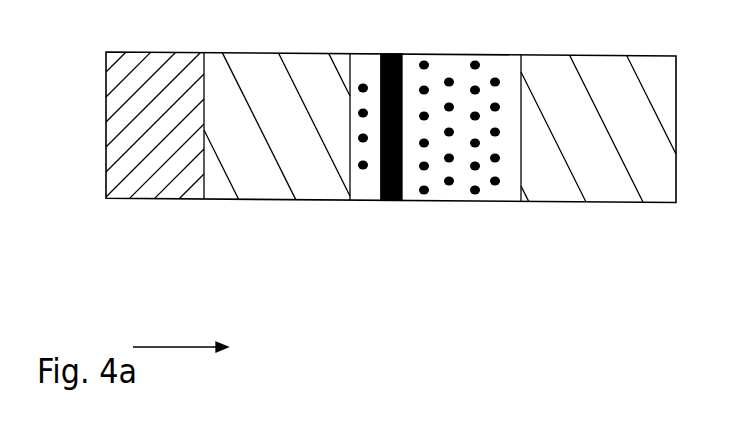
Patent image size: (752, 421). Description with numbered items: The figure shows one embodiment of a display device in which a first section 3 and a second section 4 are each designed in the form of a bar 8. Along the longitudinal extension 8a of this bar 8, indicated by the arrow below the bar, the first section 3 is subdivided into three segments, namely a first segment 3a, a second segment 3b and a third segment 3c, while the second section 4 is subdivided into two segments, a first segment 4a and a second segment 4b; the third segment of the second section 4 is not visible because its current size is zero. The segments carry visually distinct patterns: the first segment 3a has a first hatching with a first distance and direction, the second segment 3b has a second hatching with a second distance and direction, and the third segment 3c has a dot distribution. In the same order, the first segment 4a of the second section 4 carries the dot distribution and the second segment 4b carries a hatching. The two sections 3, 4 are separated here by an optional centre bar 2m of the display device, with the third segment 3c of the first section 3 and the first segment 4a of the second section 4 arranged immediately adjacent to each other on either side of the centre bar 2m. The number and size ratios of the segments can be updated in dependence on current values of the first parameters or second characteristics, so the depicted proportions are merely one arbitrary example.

The first section 3 is at (243, 155).
The first segment of the first section 3a is at (160, 55).
The second segment of the first section 3b is at (303, 58).
The third segment of the first section 3c is at (372, 55).
The centre bar 2m is at (388, 200).
The second section 4 is at (540, 156).
The first segment of the second section 4a is at (437, 60).
The second segment of the second section 4b is at (607, 65).
The bar 8 is at (163, 212).
The longitudinal extension 8a is at (172, 345).